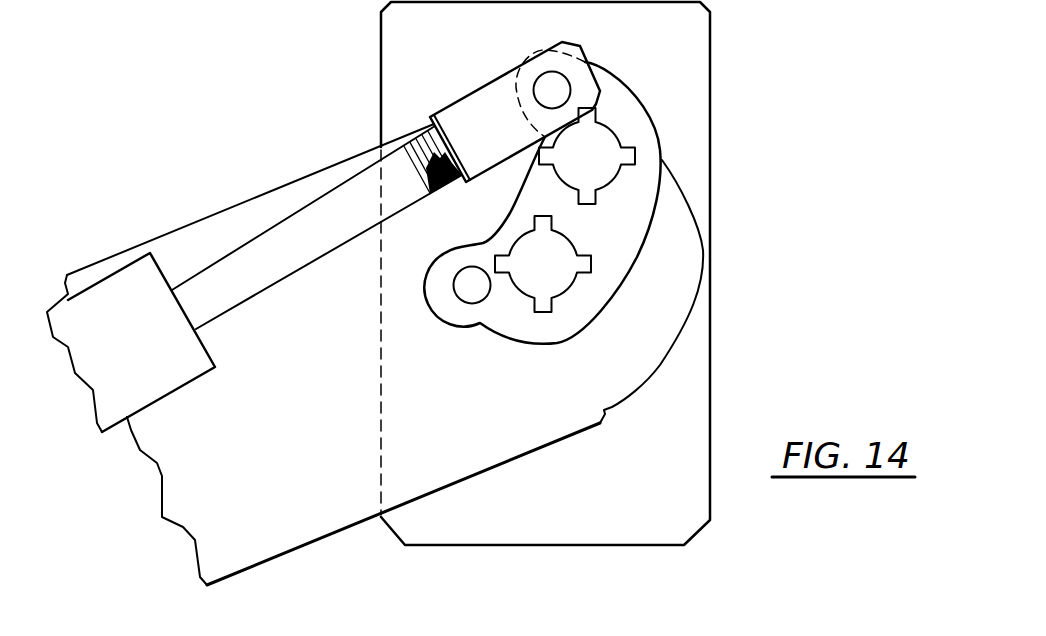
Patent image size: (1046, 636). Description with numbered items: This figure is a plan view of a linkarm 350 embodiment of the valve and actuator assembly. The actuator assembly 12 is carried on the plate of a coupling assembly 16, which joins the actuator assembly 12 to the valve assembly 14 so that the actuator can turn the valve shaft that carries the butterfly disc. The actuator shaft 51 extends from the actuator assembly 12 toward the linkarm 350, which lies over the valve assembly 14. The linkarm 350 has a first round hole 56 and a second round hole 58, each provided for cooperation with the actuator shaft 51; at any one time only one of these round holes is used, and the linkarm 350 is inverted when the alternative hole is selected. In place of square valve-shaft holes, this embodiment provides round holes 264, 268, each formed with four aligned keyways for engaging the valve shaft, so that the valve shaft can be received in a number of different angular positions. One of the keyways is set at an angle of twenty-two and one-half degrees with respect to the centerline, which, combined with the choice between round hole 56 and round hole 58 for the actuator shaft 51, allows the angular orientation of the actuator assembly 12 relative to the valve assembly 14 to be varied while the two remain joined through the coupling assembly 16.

The valve assembly 14 is at (711, 182).
The coupling assembly 16 is at (300, 549).
The actuator assembly 12 is at (208, 350).
The actuator shaft 51 is at (290, 275).
The linkarm 350 is at (557, 347).
The second round hole 58 is at (553, 72).
The first round hole 56 is at (470, 304).
The round hole with four aligned keyways 264 is at (606, 136).
The round hole with four aligned keyways 268 is at (571, 291).